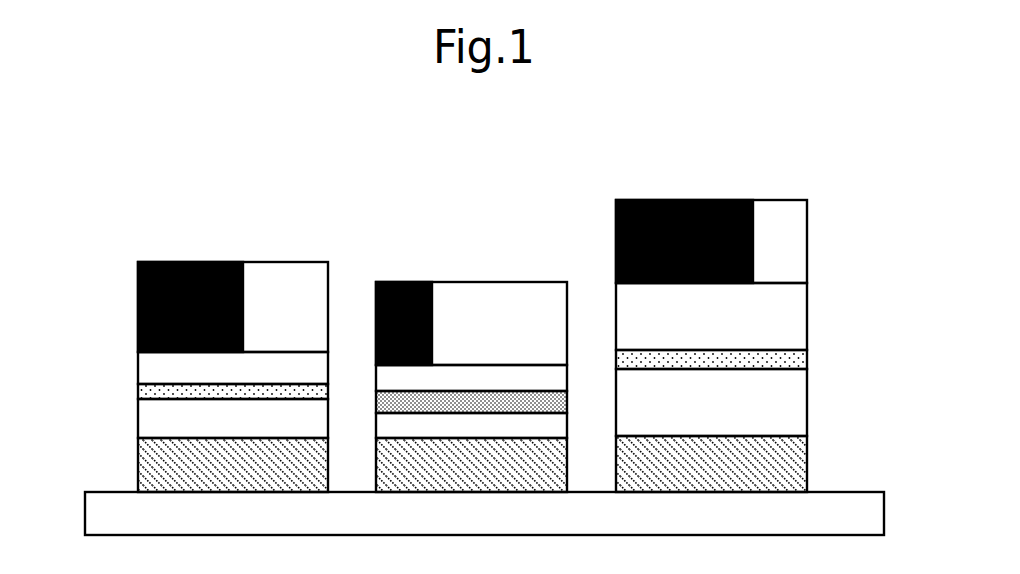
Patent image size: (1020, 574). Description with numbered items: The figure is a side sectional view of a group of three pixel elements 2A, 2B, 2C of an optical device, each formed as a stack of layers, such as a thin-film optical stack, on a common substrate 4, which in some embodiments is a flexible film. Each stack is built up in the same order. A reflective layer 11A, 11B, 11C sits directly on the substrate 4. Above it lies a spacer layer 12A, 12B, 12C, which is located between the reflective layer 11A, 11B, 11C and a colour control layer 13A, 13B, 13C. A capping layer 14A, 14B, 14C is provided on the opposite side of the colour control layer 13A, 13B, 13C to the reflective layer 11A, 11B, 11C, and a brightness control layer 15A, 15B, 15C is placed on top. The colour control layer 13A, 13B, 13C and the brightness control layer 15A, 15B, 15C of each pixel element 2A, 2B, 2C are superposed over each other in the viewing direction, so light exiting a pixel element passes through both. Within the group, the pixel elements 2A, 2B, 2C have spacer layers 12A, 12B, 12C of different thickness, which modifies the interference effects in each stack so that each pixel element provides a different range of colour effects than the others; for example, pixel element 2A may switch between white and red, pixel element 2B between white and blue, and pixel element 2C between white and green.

The pixel element 2A is at (328, 167).
The pixel element 2B is at (567, 167).
The pixel element 2C is at (616, 167).
The substrate 4 is at (493, 527).
The reflective layer 11A is at (155, 463).
The reflective layer 11B is at (540, 466).
The reflective layer 11C is at (790, 461).
The spacer layer 12A is at (155, 418).
The spacer layer 12B is at (540, 423).
The spacer layer 12C is at (790, 403).
The colour control layer 13A is at (155, 391).
The colour control layer 13B is at (540, 398).
The colour control layer 13C is at (790, 359).
The capping layer 14A is at (155, 367).
The capping layer 14B is at (540, 376).
The capping layer 14C is at (790, 313).
The brightness control layer 15A is at (130, 306).
The brightness control layer 15B is at (494, 261).
The brightness control layer 15C is at (811, 238).